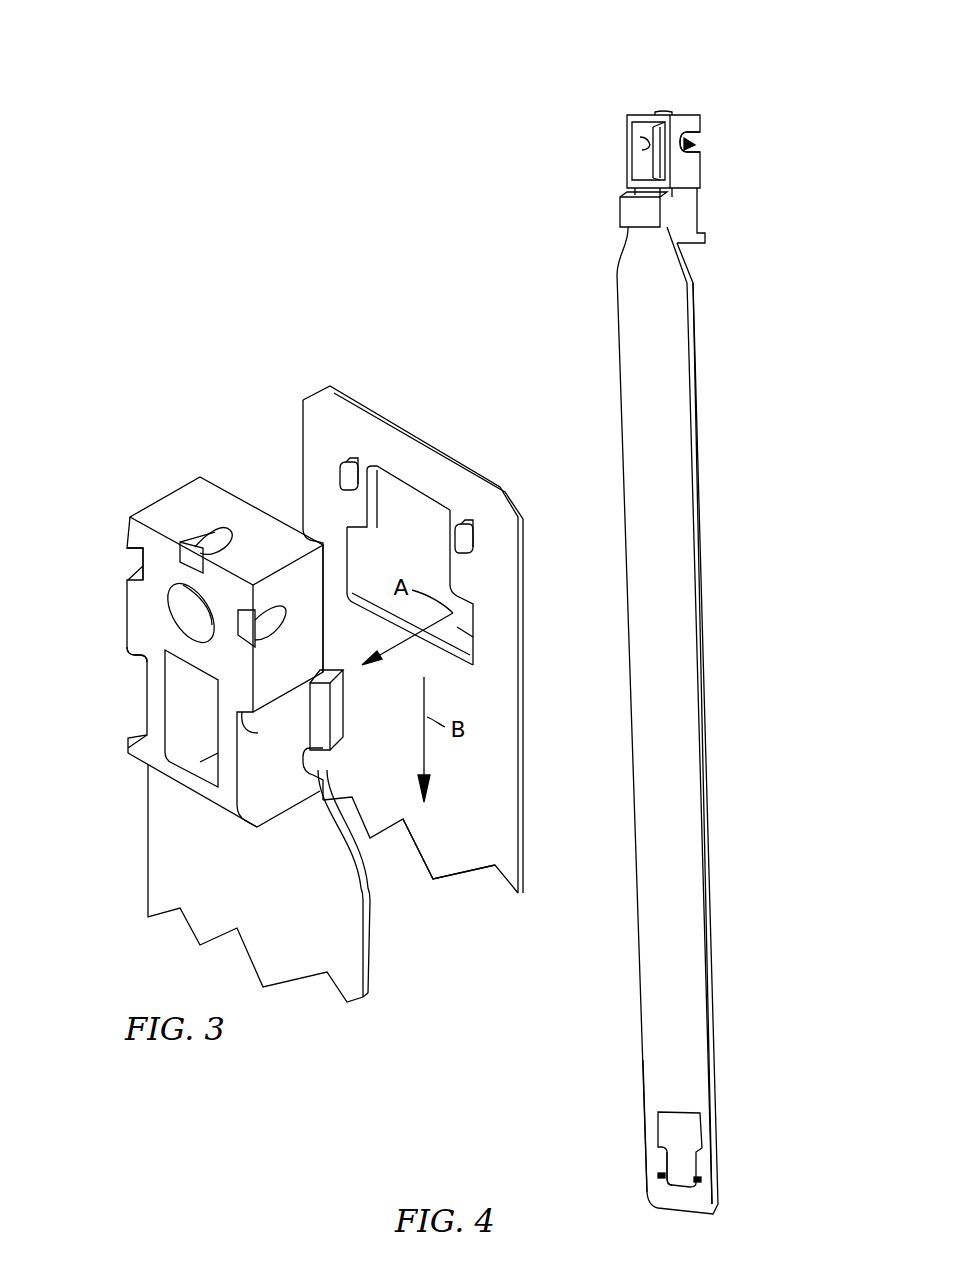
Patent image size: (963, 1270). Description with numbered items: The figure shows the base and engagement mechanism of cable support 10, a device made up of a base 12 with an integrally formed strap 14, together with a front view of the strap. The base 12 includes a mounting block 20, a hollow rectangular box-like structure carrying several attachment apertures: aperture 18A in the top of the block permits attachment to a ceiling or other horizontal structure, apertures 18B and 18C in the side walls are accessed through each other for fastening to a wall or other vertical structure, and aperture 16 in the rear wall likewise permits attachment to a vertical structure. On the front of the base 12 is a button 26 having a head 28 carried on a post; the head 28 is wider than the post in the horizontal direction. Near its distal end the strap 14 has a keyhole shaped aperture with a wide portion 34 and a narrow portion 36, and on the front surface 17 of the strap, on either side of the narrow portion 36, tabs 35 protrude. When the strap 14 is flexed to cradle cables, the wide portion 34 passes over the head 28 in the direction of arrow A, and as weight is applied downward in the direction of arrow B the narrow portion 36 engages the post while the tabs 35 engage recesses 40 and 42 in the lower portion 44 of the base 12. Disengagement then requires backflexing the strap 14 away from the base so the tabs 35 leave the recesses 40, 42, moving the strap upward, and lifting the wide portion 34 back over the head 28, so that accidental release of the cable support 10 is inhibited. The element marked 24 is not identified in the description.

In FIG. 4, the cable support 10 is at (745, 500).
In FIG. 3, the base 12 is at (78, 637).
In FIG. 4, the base 12 is at (708, 90).
In FIG. 3, the strap 14 is at (508, 832).
In FIG. 4, the strap 14 is at (697, 876).
In FIG. 3, the aperture 16 is at (200, 612).
In FIG. 3, the front surface 17 is at (470, 846).
In FIG. 4, the front surface 17 is at (648, 644).
In FIG. 3, the aperture 18A is at (213, 535).
In FIG. 4, the aperture 18A is at (675, 113).
In FIG. 3, the aperture 18B is at (128, 560).
In FIG. 4, the aperture 18B is at (683, 147).
In FIG. 3, the aperture 18C is at (273, 622).
In FIG. 4, the aperture 18C is at (648, 143).
In FIG. 3, the mounting block 20 is at (140, 615).
In FIG. 4, the shoulder 24 is at (653, 188).
In FIG. 4, the button 26 is at (585, 202).
In FIG. 3, the head 28 is at (338, 712).
In FIG. 4, the head 28 is at (635, 206).
In FIG. 3, the wide portion 34 is at (457, 632).
In FIG. 4, the wide portion 34 is at (688, 1133).
In FIG. 3, the tabs 35 is at (340, 477).
In FIG. 4, the tabs 35 is at (660, 1177).
In FIG. 3, the narrow portion 36 is at (403, 510).
In FIG. 4, the narrow portion 36 is at (673, 1163).
In FIG. 3, the recess 40 is at (264, 730).
In FIG. 3, the recess 42 is at (136, 655).
In FIG. 3, the lower portion 44 is at (237, 810).